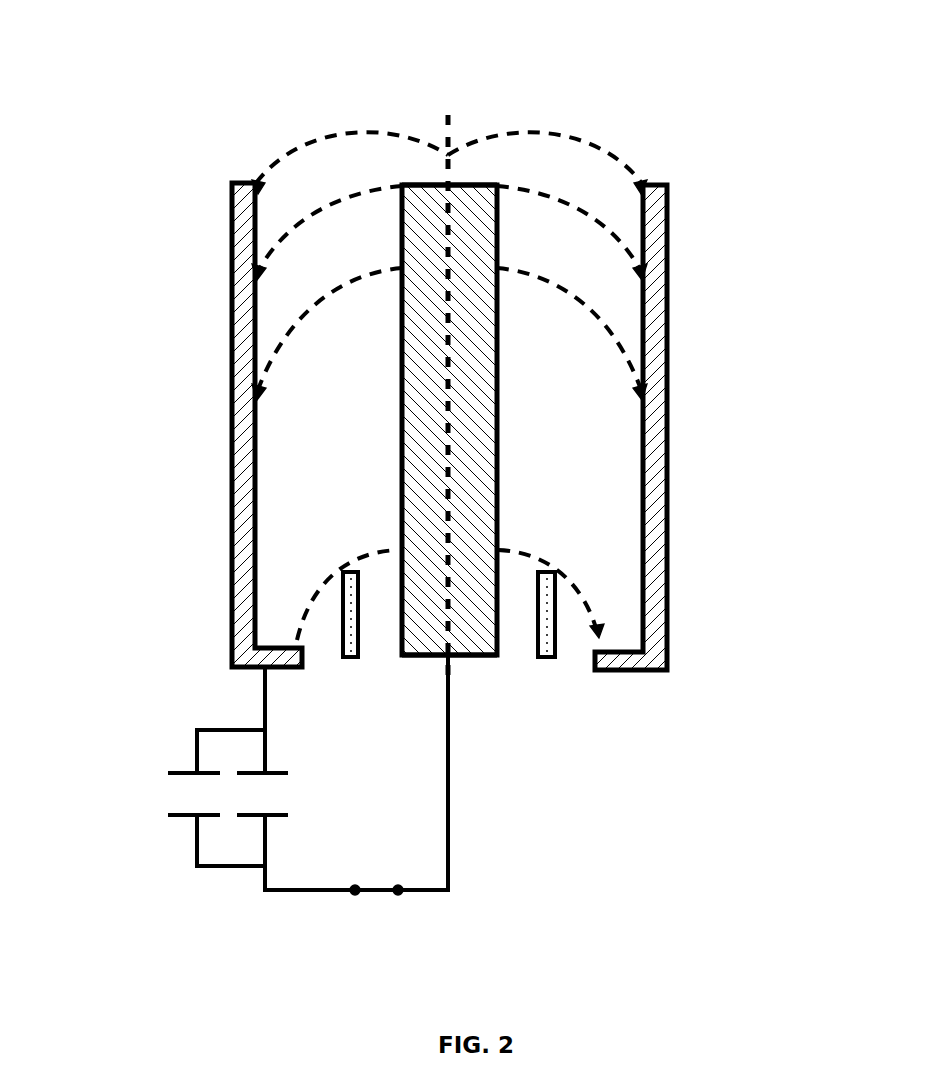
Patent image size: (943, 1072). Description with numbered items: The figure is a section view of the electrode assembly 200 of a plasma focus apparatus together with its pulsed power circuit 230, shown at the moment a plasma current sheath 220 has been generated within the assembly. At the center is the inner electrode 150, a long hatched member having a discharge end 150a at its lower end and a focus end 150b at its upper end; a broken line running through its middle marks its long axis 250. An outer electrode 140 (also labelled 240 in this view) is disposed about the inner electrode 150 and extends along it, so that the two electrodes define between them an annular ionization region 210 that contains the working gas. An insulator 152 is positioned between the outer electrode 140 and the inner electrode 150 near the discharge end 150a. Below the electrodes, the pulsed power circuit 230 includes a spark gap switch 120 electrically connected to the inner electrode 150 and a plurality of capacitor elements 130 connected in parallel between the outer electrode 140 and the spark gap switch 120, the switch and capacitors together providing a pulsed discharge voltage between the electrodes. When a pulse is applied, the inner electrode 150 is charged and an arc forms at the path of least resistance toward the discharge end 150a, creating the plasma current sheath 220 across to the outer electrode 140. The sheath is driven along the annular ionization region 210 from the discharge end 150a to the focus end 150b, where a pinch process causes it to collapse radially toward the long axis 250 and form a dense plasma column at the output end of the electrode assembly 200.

The electrode assembly 200 is at (145, 153).
The long axis 250 is at (468, 128).
The focus end 150b is at (407, 184).
The plasma current sheath 220 is at (603, 227).
The annular ionization region 210 is at (303, 470).
The inner electrode 150 is at (407, 490).
The outer electrode 140 is at (230, 630).
The outer electrode housing 240 is at (631, 427).
The insulator 152 is at (355, 655).
The discharge end 150a is at (465, 655).
The capacitor elements 130 is at (265, 830).
The spark gap switch 120 is at (382, 891).
The pulsed power circuit 230 is at (312, 835).